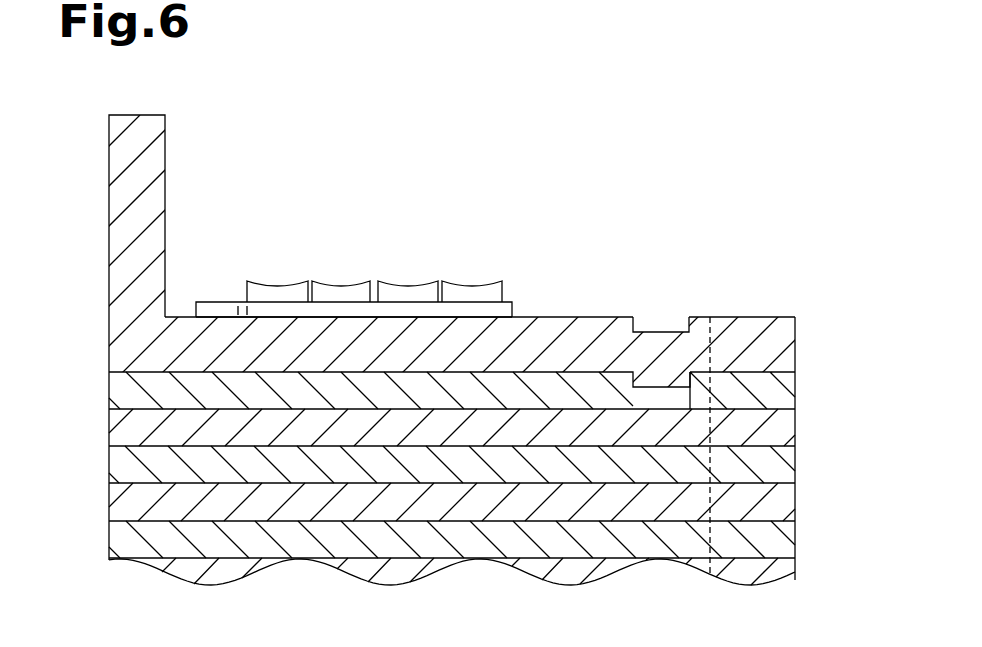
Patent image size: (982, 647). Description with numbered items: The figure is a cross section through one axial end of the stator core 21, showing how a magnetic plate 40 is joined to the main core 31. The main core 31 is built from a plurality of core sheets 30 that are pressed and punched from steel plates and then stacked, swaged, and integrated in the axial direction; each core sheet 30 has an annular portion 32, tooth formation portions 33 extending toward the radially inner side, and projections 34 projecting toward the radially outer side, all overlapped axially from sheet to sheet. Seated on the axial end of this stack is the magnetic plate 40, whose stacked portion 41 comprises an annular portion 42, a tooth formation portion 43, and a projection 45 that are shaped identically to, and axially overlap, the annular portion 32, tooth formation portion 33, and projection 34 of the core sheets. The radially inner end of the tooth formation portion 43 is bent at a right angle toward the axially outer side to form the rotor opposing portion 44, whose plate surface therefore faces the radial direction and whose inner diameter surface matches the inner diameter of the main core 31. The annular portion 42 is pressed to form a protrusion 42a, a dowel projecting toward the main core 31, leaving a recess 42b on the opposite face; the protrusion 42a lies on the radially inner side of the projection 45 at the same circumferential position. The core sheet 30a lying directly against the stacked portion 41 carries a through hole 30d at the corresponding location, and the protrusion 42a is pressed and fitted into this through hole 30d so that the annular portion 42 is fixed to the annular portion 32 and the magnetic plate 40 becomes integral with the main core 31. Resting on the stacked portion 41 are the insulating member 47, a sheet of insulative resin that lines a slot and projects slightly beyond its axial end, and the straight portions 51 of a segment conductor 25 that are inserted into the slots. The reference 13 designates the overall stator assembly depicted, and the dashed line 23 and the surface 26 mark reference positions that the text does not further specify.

The electronic component module 13 is at (722, 190).
The stator core 21 is at (797, 568).
The boundary line 23 is at (720, 322).
The segment conductor 25 is at (335, 292).
The upper surface 26 is at (768, 317).
The core sheet 30 is at (450, 497).
The core sheet adjacent to the stacked portion 30a is at (113, 388).
The through hole 30d is at (695, 415).
The main core 31 is at (423, 564).
The annular portion 32 is at (634, 584).
The tooth formation portion 33 is at (364, 592).
The projection 34 is at (481, 534).
The magnetic plate 40 is at (491, 262).
The stacked portion 41 is at (537, 317).
The annular portion 42 is at (715, 334).
The protrusion 42a is at (683, 385).
The recess 42b is at (688, 322).
The tooth formation portion 43 is at (395, 317).
The rotor opposing portion 44 is at (117, 190).
The projection 45 is at (491, 262).
The insulating member 47 is at (221, 302).
The straight portion 51 is at (374, 265).